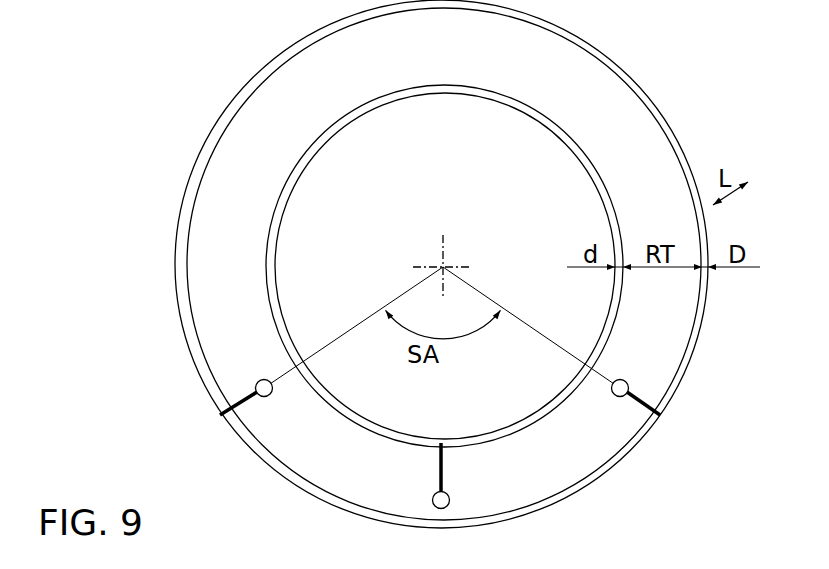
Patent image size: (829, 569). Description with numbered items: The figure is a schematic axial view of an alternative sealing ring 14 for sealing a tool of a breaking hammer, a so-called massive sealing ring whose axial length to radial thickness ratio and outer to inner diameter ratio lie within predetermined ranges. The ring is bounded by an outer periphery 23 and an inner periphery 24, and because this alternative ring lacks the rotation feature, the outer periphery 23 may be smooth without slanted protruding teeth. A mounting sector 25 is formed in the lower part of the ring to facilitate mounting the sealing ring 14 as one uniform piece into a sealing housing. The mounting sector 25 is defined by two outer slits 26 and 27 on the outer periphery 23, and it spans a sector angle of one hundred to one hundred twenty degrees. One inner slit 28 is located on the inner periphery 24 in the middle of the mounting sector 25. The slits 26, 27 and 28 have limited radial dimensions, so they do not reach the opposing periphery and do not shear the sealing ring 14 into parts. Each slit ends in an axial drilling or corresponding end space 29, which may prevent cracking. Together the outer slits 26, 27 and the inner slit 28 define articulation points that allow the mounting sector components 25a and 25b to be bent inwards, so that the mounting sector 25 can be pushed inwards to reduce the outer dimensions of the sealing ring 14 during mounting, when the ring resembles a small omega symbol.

The sealing ring 14 is at (122, 80).
The outer periphery 23 is at (176, 256).
The inner periphery 24 is at (271, 258).
The mounting sector 25 is at (290, 509).
The mounting sector component 25a is at (553, 472).
The mounting sector component 25b is at (288, 453).
The outer slit 26 is at (647, 402).
The outer slit 27 is at (240, 398).
The inner slit 28 is at (445, 470).
The end space 29 is at (265, 380).